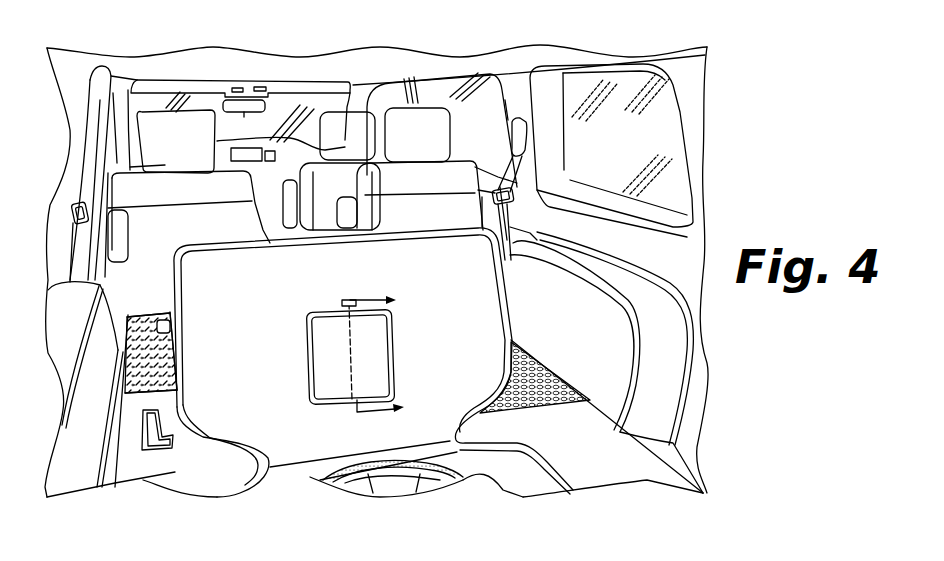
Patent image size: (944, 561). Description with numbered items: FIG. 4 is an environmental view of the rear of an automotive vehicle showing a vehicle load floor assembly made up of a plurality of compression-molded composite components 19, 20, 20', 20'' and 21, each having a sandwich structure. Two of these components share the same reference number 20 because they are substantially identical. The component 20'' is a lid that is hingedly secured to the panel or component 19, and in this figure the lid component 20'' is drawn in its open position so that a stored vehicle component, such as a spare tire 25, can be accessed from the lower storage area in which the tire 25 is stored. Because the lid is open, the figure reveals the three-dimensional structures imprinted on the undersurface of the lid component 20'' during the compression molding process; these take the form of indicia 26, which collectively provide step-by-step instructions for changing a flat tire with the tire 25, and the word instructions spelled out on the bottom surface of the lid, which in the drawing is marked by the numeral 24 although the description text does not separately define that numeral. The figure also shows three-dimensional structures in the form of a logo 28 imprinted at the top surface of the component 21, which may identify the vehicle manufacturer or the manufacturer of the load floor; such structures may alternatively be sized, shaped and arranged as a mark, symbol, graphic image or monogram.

The panel component 19 is at (610, 468).
The compression-molded composite component 20 is at (97, 349).
The compression-molded composite component 20' is at (577, 365).
The lid component 20'' is at (189, 216).
The compression-molded composite component 21 is at (108, 443).
The barrier panel 24 is at (398, 283).
The spare tire 25 is at (463, 465).
The indicia 26 is at (392, 350).
The logo 28 is at (162, 450).